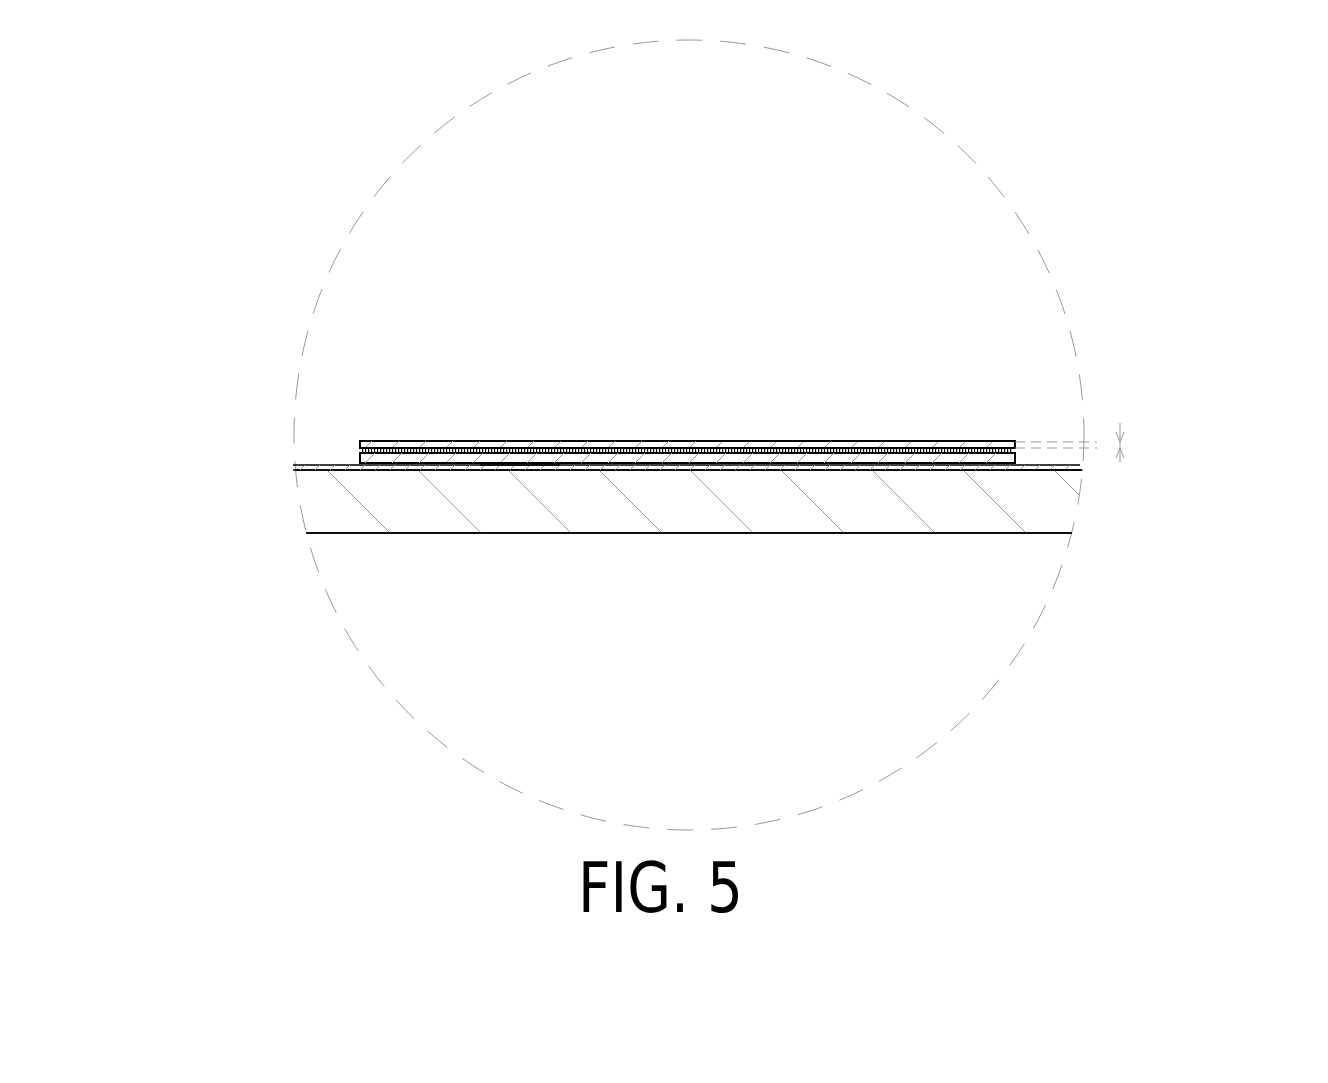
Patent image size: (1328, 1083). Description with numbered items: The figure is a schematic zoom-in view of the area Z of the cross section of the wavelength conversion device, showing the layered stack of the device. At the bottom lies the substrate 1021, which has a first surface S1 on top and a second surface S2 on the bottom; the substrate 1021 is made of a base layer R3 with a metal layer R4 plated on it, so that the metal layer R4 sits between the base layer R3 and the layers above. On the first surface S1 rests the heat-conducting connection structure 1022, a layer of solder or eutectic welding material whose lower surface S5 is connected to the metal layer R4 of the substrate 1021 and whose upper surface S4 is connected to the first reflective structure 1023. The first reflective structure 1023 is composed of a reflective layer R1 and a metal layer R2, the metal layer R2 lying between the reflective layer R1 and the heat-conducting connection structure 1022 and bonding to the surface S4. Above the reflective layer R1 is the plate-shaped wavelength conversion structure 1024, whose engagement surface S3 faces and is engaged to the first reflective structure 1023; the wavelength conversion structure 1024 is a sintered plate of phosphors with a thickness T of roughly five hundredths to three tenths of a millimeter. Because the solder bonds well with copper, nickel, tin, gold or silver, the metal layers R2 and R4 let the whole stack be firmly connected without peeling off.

The area Z is at (942, 132).
The substrate 1021 is at (1220, 468).
The first surface S1 is at (1080, 466).
The second surface S2 is at (1010, 533).
The base layer R3 is at (1080, 470).
The metal layer R4 is at (1052, 498).
The heat-conducting connection structure 1022 is at (533, 305).
The surface S4 is at (477, 460).
The surface S5 is at (513, 463).
The first reflective structure 1023 is at (192, 372).
The reflective layer R1 is at (358, 448).
The metal layer R2 is at (358, 458).
The wavelength conversion structure 1024 is at (392, 442).
The engagement surface S3 is at (853, 432).
The thickness T is at (1123, 447).